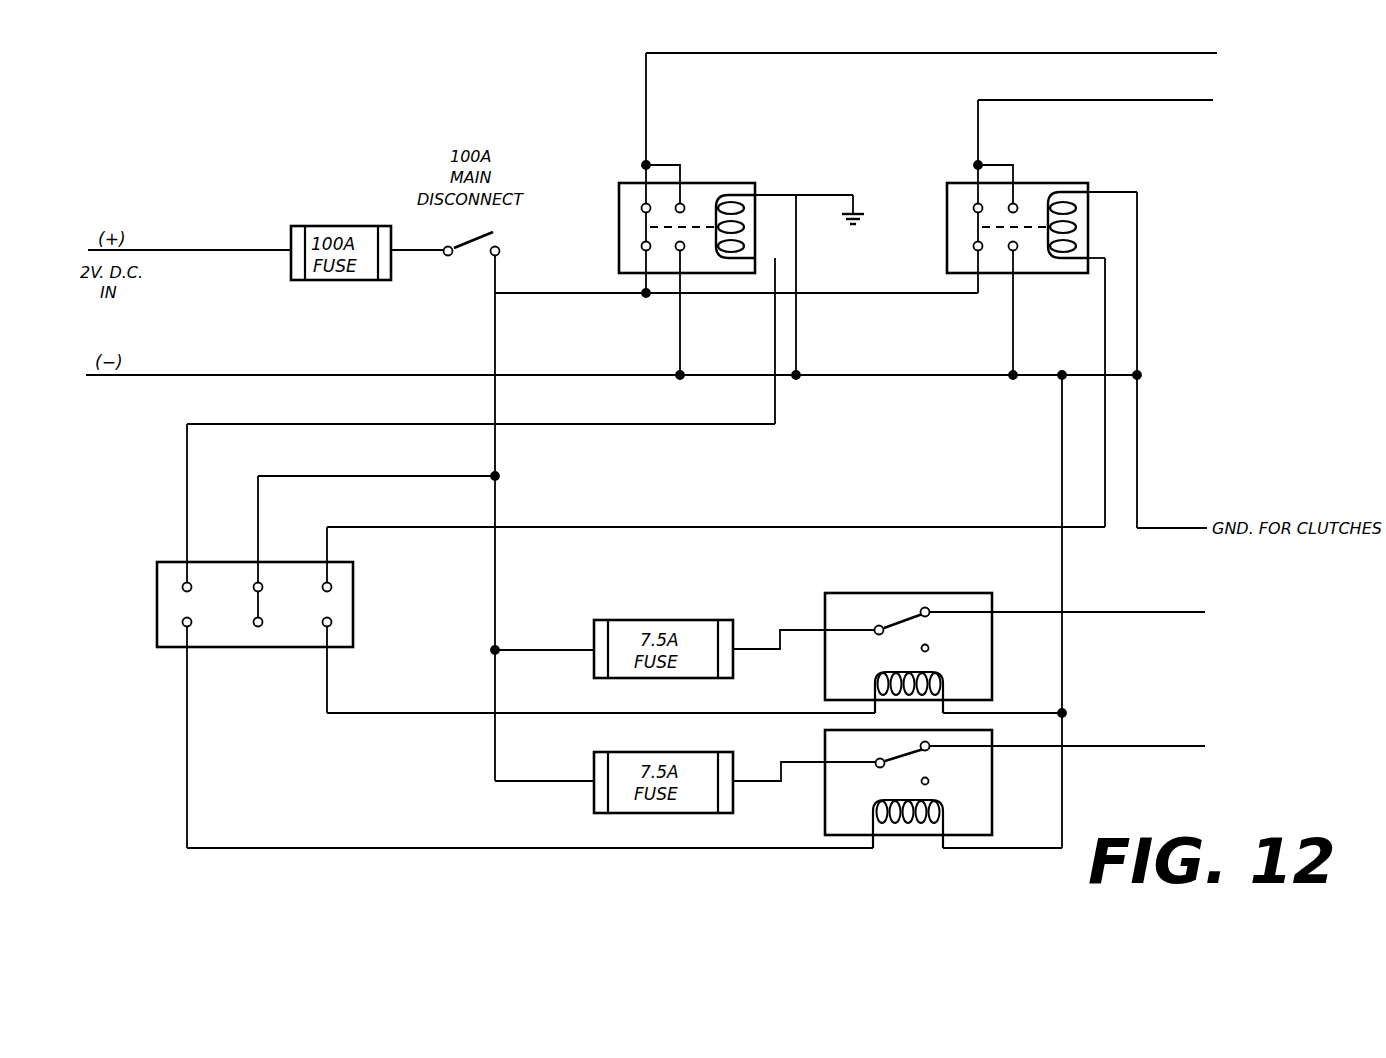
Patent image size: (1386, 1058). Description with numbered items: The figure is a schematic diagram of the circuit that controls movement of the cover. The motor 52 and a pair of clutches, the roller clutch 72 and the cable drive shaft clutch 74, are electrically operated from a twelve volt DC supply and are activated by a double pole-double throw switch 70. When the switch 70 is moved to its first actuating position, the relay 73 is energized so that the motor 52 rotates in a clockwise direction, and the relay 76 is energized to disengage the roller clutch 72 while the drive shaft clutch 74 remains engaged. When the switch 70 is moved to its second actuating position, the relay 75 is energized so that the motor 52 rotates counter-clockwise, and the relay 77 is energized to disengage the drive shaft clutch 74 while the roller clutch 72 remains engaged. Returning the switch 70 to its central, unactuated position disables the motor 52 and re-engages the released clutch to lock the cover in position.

The motor 52 is at (990, 78).
The double pole-double throw switch 70 is at (170, 562).
The roller clutch 72 is at (1130, 612).
The relay 73 is at (1070, 183).
The cable drive shaft clutch 74 is at (1133, 746).
The relay 75 is at (740, 183).
The relay 76 is at (975, 593).
The relay 77 is at (995, 787).